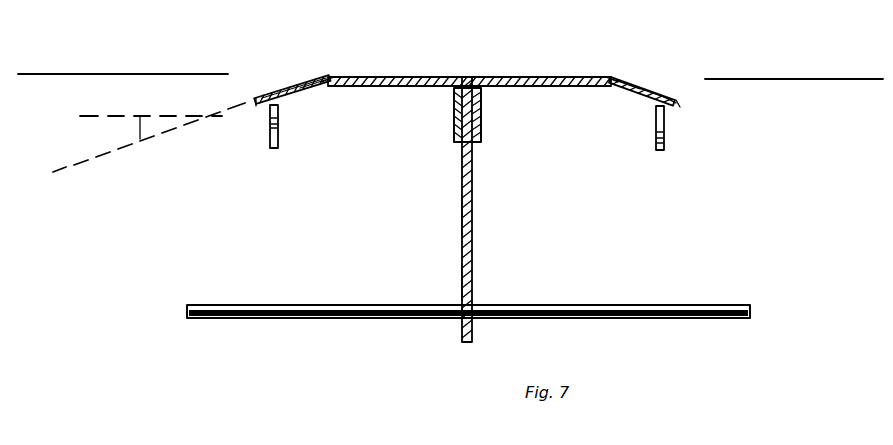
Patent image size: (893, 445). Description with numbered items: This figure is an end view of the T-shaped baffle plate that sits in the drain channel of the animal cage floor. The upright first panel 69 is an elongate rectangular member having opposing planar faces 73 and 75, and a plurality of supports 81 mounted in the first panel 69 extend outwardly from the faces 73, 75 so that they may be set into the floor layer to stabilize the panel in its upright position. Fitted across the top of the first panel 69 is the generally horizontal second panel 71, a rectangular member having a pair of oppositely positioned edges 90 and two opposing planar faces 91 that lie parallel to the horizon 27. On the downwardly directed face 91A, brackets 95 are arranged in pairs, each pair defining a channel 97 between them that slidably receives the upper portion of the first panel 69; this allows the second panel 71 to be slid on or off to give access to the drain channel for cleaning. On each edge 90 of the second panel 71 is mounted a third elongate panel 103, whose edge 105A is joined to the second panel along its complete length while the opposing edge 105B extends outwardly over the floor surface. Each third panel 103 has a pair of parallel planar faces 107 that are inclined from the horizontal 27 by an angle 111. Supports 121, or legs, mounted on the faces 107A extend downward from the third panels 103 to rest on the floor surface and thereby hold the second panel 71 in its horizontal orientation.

The horizon 27 is at (145, 75).
The first panel 69 is at (472, 290).
The second panel 71 is at (540, 77).
The planar face 73 is at (472, 248).
The planar face 75 is at (462, 215).
The supports 81 is at (323, 318).
The edges 90 is at (328, 77).
The planar faces 91 is at (427, 77).
The downwardly directed face 91A is at (585, 86).
The brackets 95 is at (454, 112).
The channel 97 is at (480, 77).
The third elongate panel 103 is at (308, 90).
The edge 105A is at (328, 78).
The edge 105B is at (255, 106).
The planar faces 107 is at (284, 92).
The face 107A is at (653, 108).
The angle 111 is at (140, 139).
The supports 121 is at (270, 130).